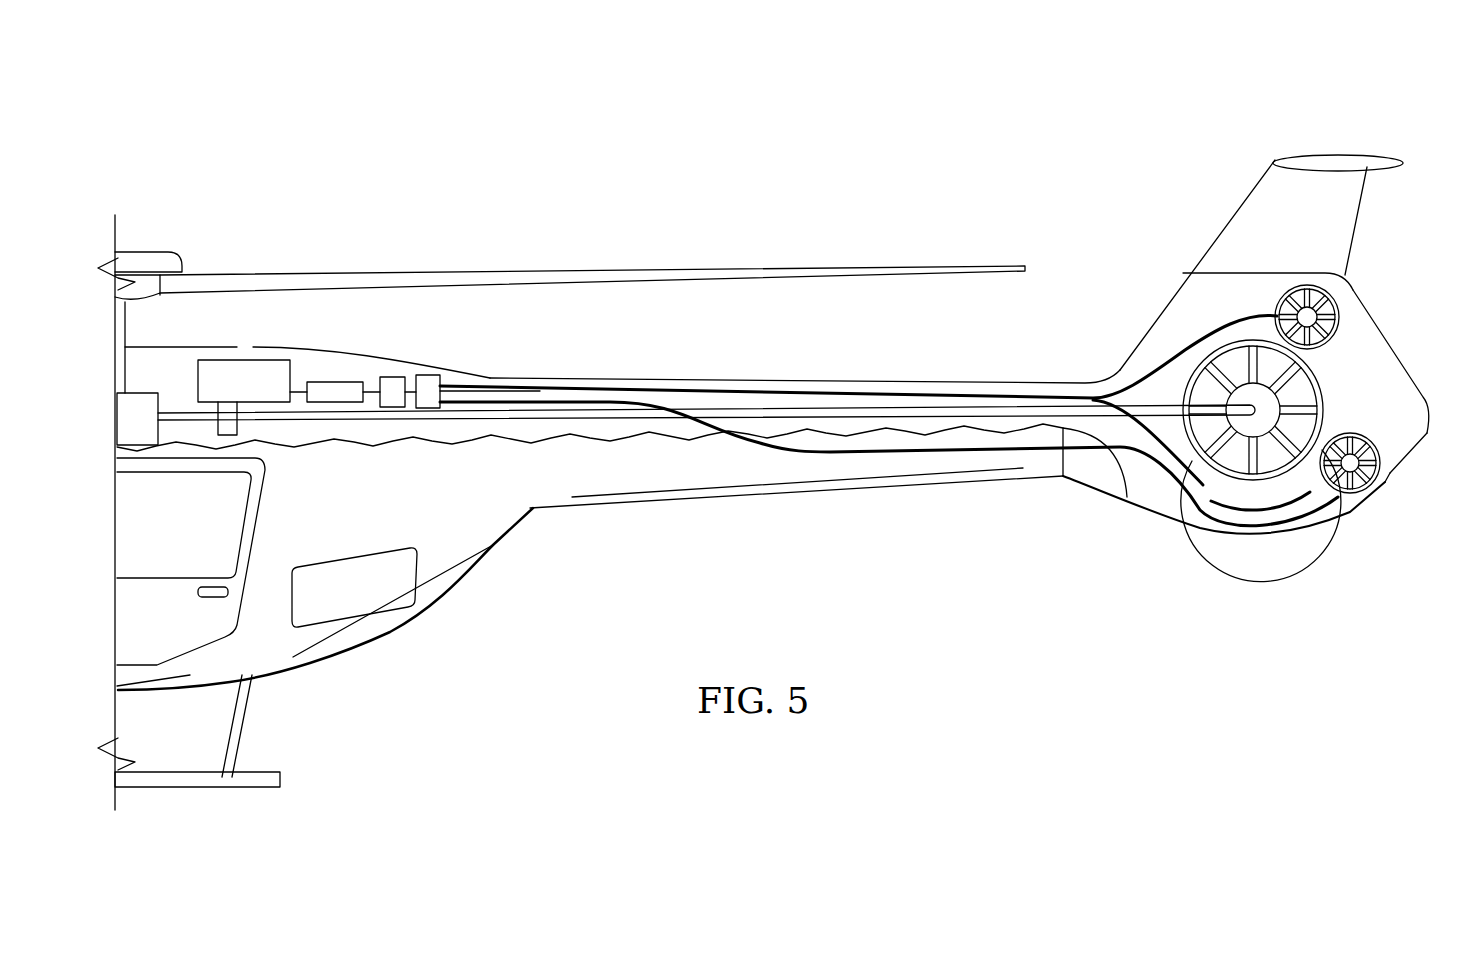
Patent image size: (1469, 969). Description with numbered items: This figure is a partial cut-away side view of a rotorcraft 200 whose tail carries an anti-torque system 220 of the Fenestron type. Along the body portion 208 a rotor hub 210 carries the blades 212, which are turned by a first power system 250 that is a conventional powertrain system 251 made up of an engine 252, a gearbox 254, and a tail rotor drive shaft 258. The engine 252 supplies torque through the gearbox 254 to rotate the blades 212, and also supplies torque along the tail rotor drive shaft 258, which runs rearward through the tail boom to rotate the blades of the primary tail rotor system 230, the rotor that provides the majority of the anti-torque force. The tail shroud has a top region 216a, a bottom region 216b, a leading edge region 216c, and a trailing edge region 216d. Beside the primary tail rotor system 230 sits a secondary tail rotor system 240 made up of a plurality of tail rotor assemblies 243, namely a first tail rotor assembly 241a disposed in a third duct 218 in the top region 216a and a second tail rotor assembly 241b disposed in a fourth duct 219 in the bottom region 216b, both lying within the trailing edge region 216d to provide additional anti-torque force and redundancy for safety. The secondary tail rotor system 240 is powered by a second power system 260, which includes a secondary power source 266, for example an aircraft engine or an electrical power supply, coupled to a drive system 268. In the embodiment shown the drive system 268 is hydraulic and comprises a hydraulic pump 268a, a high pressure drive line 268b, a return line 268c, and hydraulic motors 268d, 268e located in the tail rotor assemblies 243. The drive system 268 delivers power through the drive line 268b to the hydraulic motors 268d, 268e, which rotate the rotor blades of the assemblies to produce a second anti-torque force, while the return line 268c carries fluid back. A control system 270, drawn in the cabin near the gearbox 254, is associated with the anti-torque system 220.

The rotorcraft 200 is at (880, 152).
The fuselage 208 is at (385, 642).
The main rotor hub 210 is at (140, 252).
The blades 212 is at (592, 267).
The top region 216a is at (1228, 270).
The bottom region 216b is at (1243, 538).
The leading edge region 216c is at (1113, 352).
The trailing edge region 216d is at (1375, 322).
The third duct 218 is at (1268, 296).
The fourth duct 219 is at (1393, 480).
The anti-torque system 220 is at (1150, 240).
The primary tail rotor system 230 is at (1213, 480).
The secondary tail rotor system 240 is at (1403, 575).
The first tail rotor assembly 241a is at (1352, 294).
The second tail rotor assembly 241b is at (1365, 497).
The plurality of tail rotor assemblies 243 is at (1310, 548).
The first power system 250 is at (245, 338).
The powertrain system 251 is at (288, 335).
The engine 252 is at (198, 375).
The gearbox 254 is at (158, 432).
The tail rotor drive shaft 258 is at (755, 410).
The second power system 260 is at (390, 425).
The secondary power source 266 is at (392, 376).
The drive system 268 is at (447, 413).
The hydraulic pump 268a is at (430, 374).
The high pressure drive line 268b is at (876, 395).
The return line 268c is at (872, 455).
The hydraulic motor 268d is at (1355, 434).
The hydraulic motor 268e is at (1300, 287).
The control system 270 is at (330, 404).